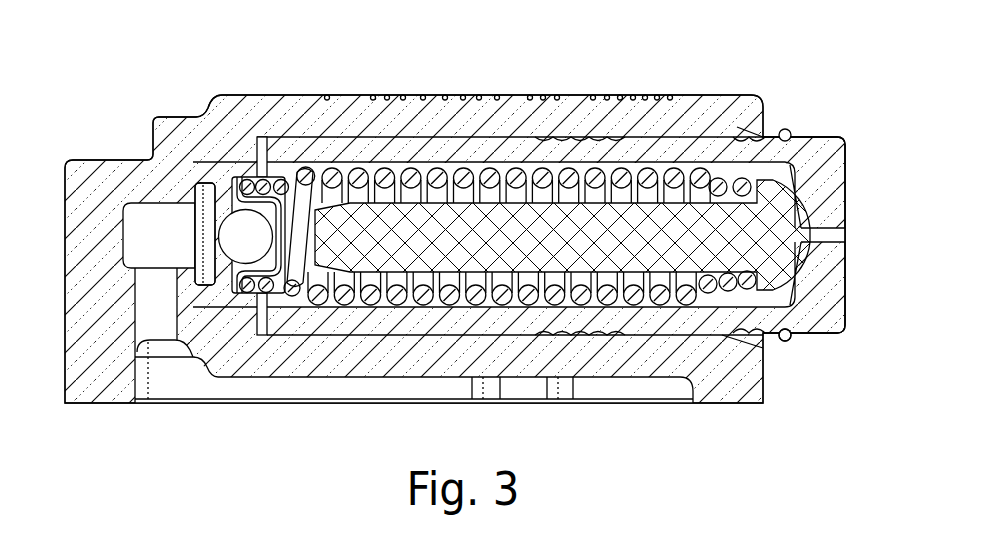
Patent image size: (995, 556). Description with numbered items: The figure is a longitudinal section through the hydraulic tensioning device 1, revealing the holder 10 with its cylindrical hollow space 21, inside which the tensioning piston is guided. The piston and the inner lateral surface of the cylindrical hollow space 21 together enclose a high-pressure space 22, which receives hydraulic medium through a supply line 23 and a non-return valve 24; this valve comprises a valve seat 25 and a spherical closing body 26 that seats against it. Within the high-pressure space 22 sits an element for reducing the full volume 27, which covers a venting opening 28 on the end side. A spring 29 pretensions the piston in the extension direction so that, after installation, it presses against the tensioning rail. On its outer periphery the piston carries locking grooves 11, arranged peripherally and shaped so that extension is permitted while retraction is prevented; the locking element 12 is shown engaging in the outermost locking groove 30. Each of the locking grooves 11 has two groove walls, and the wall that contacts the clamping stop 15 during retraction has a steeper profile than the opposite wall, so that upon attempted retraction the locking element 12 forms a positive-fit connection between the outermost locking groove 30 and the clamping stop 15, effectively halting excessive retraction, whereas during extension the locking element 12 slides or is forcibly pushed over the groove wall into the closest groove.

The tensioning device 1 is at (187, 80).
The holder 10 is at (545, 353).
The locking grooves 11 is at (603, 138).
The locking element 12 is at (785, 342).
The clamping stop 15 is at (752, 338).
The cylindrical hollow space 21 is at (380, 337).
The high-pressure space 22 is at (400, 170).
The supply line 23 is at (157, 232).
The non-return valve 24 is at (223, 283).
The valve seat 25 is at (205, 234).
The spherical closing body 26 is at (247, 240).
The element for reducing the full volume 27 is at (477, 217).
The venting opening 28 is at (837, 228).
The spring 29 is at (300, 195).
The outermost locking groove 30 is at (785, 335).